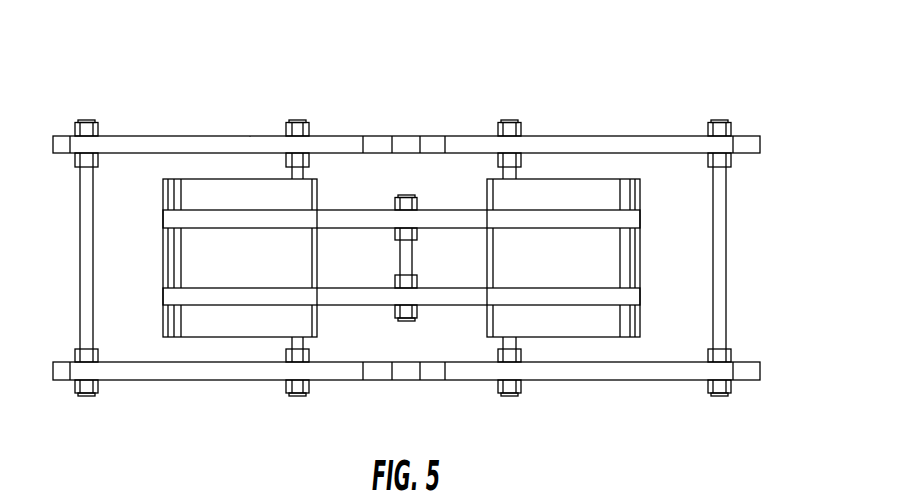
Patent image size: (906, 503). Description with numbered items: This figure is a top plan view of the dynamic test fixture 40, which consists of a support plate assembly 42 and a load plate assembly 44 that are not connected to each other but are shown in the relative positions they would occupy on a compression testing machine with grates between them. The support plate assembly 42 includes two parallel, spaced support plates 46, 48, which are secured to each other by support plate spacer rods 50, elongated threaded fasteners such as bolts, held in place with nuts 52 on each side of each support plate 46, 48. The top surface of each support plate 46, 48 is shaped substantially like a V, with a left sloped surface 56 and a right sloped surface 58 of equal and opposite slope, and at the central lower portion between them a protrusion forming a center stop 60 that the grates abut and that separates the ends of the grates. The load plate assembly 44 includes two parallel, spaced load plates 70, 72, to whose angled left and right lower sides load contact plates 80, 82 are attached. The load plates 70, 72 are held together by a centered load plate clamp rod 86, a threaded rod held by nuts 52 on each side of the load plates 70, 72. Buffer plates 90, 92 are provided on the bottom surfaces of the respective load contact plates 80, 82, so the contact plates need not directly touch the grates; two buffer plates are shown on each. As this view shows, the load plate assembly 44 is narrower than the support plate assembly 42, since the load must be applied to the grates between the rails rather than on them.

The dynamic test fixture 40 is at (690, 57).
The support plate assembly 42 is at (166, 128).
The load plate assembly 44 is at (213, 254).
The support plate 46 is at (195, 372).
The support plate 48 is at (250, 148).
The support plate spacer rod 50 is at (718, 257).
The nut 52 is at (290, 358).
The left sloped surface 56 is at (121, 136).
The right sloped surface 58 is at (581, 135).
The center stop 60 is at (403, 145).
The load plate 70 is at (374, 298).
The load plate 72 is at (365, 218).
The load contact plate 80 is at (195, 195).
The load contact plate 82 is at (605, 196).
The load plate clamp rod 86 is at (405, 255).
The buffer plate 90 is at (165, 247).
The buffer plate 92 is at (628, 260).